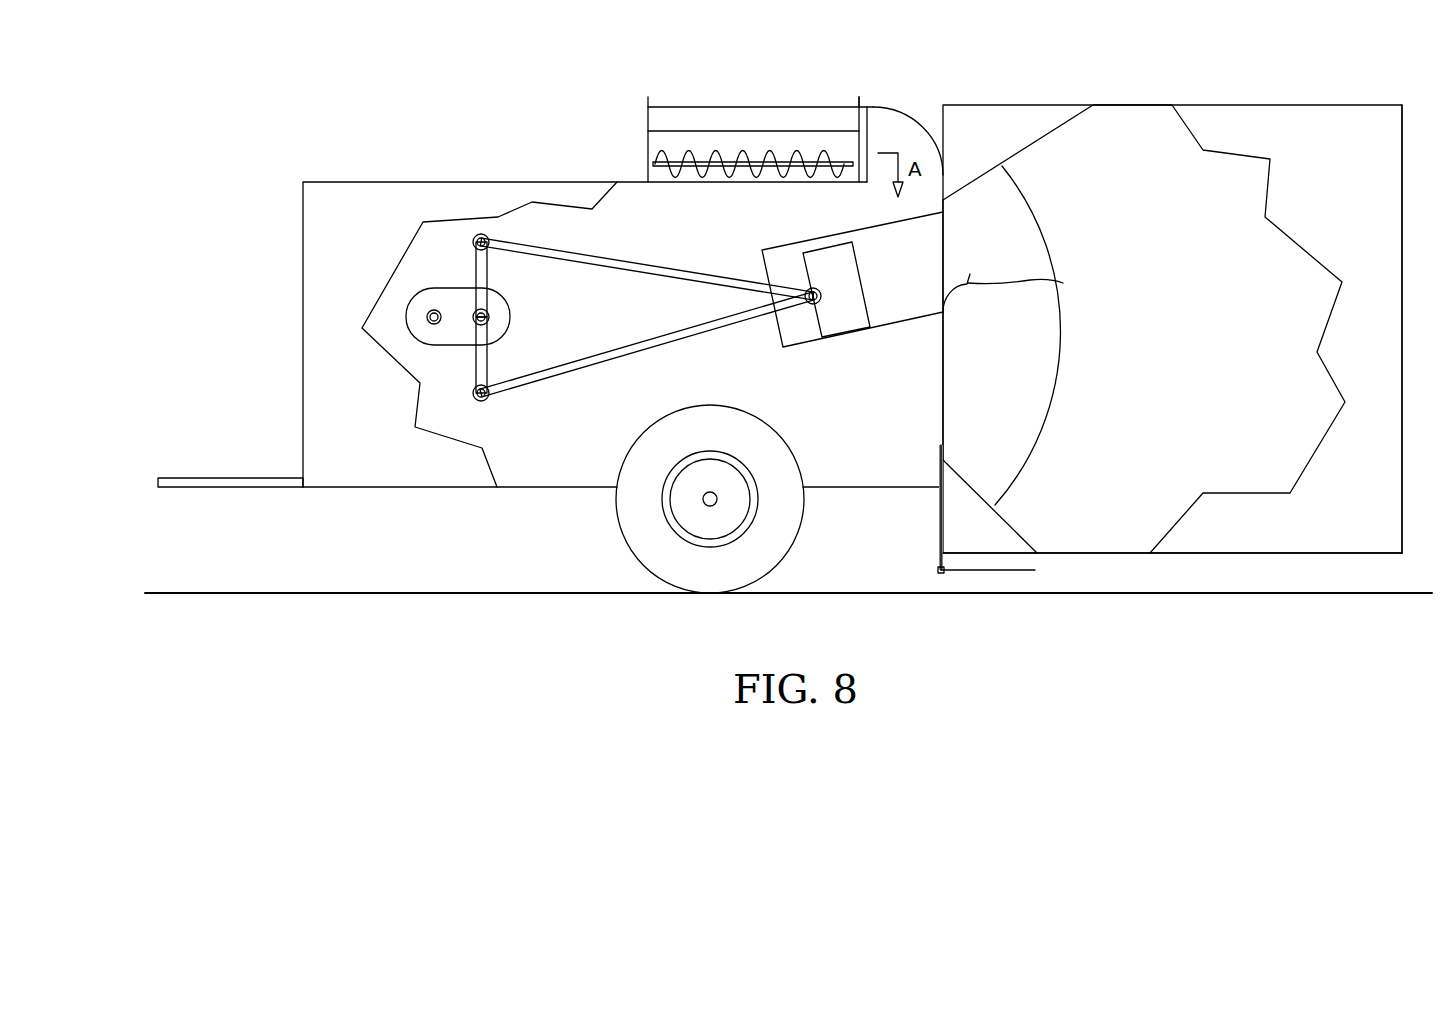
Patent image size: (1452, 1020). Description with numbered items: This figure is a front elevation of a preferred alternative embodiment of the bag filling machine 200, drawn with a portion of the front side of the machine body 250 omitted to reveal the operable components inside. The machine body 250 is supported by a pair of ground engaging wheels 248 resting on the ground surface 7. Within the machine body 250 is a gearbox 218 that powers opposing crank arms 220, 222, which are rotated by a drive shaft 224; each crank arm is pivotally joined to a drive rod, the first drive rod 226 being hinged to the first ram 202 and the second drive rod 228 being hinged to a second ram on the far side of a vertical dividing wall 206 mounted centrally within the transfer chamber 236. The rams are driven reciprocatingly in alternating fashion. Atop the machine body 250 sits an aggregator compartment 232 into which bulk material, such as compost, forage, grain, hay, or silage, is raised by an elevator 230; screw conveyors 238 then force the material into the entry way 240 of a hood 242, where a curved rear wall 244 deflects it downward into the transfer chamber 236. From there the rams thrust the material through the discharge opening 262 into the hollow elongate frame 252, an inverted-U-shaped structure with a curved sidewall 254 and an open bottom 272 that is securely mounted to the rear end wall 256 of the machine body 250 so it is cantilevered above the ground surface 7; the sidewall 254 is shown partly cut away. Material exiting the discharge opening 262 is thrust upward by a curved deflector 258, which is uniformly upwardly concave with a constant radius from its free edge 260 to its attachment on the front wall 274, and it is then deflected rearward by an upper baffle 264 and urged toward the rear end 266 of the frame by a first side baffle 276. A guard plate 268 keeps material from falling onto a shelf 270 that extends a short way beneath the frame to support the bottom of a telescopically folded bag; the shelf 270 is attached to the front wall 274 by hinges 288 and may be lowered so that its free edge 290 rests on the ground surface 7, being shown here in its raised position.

The ground surface 7 is at (840, 592).
The bag filling machine 200 is at (262, 269).
The first ram 202 is at (845, 320).
The vertical dividing wall 206 is at (792, 330).
The gearbox 218 is at (465, 337).
The crank arm 220 is at (477, 270).
The crank arm 222 is at (486, 362).
The drive shaft 224 is at (488, 316).
The first drive rod 226 is at (572, 252).
The second drive rod 228 is at (580, 358).
The elevator 230 is at (683, 108).
The aggregator compartment 232 is at (647, 142).
The transfer chamber 236 is at (905, 302).
The screw conveyors 238 is at (728, 152).
The entry way 240 is at (866, 125).
The hood 242 is at (875, 100).
The curved rear wall 244 is at (908, 112).
The ground engaging wheels 248 is at (632, 546).
The machine body 250 is at (385, 488).
The hollow elongate frame 252 is at (1220, 105).
The sidewall 254 is at (1372, 492).
The rear end wall 256 is at (943, 389).
The curved deflector 258 is at (1058, 283).
The free edge 260 is at (970, 274).
The discharge opening 262 is at (943, 233).
The upper baffle 264 is at (1043, 137).
The rear end 266 is at (1403, 145).
The guard plate 268 is at (1010, 522).
The shelf 270 is at (983, 594).
The open bottom 272 is at (1203, 555).
The front wall 274 is at (946, 104).
The first side baffle 276 is at (1023, 357).
The hinges 288 is at (938, 570).
The free edge 290 is at (1035, 570).